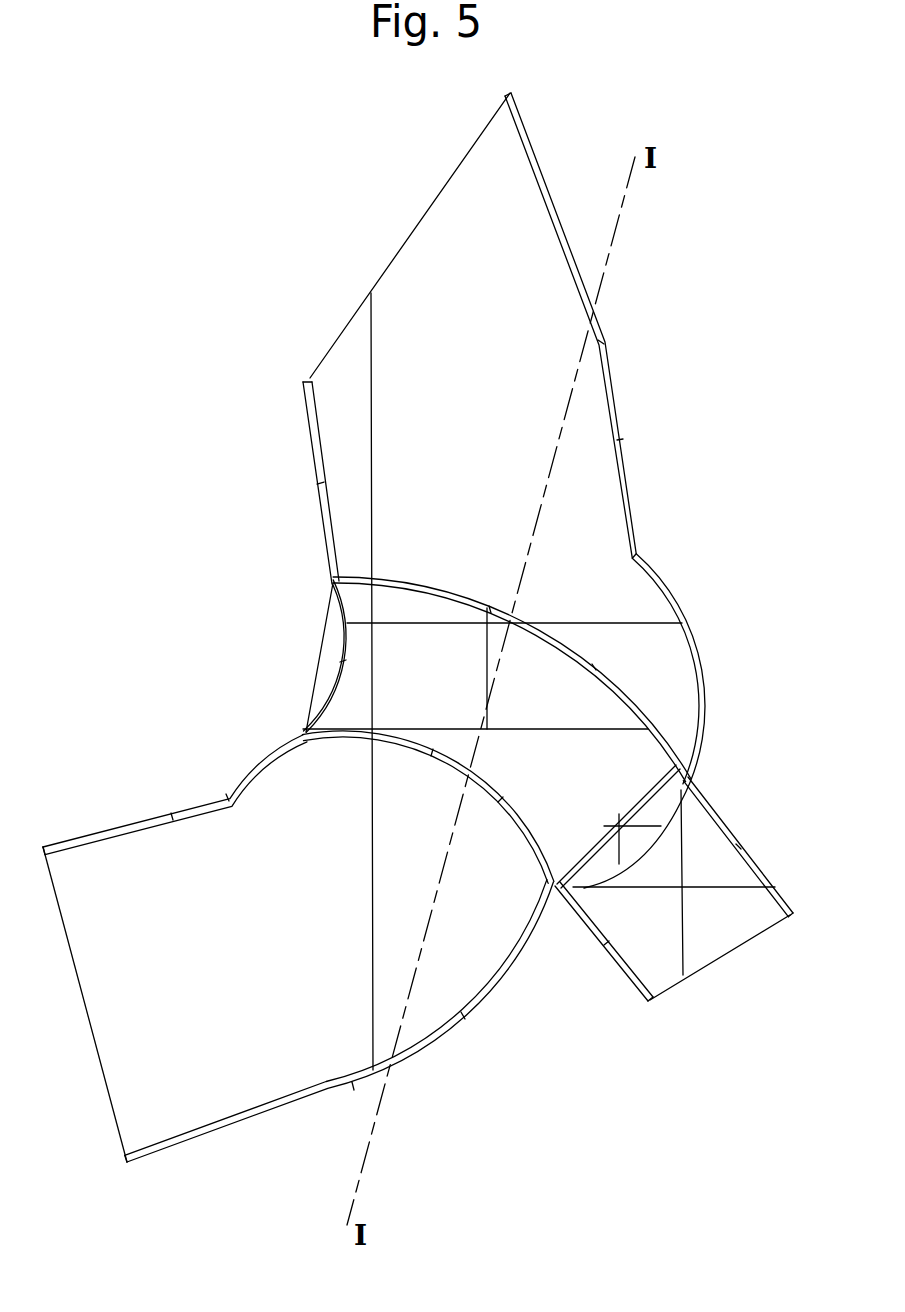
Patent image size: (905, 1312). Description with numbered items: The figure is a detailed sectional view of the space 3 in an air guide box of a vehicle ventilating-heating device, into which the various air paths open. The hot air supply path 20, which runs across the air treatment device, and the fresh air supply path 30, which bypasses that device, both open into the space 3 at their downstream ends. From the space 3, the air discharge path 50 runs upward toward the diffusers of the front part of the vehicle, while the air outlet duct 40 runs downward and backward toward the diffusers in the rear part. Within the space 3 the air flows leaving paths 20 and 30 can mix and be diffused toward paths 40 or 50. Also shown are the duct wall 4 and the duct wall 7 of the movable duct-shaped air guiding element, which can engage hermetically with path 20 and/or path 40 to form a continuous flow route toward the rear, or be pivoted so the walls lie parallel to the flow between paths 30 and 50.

The space 3 is at (514, 607).
The duct wall 4 is at (427, 591).
The duct wall 7 is at (406, 750).
The air path 20 is at (245, 667).
The air path 30 is at (293, 966).
The air outlet duct 40 is at (734, 933).
The air path 50 is at (504, 392).